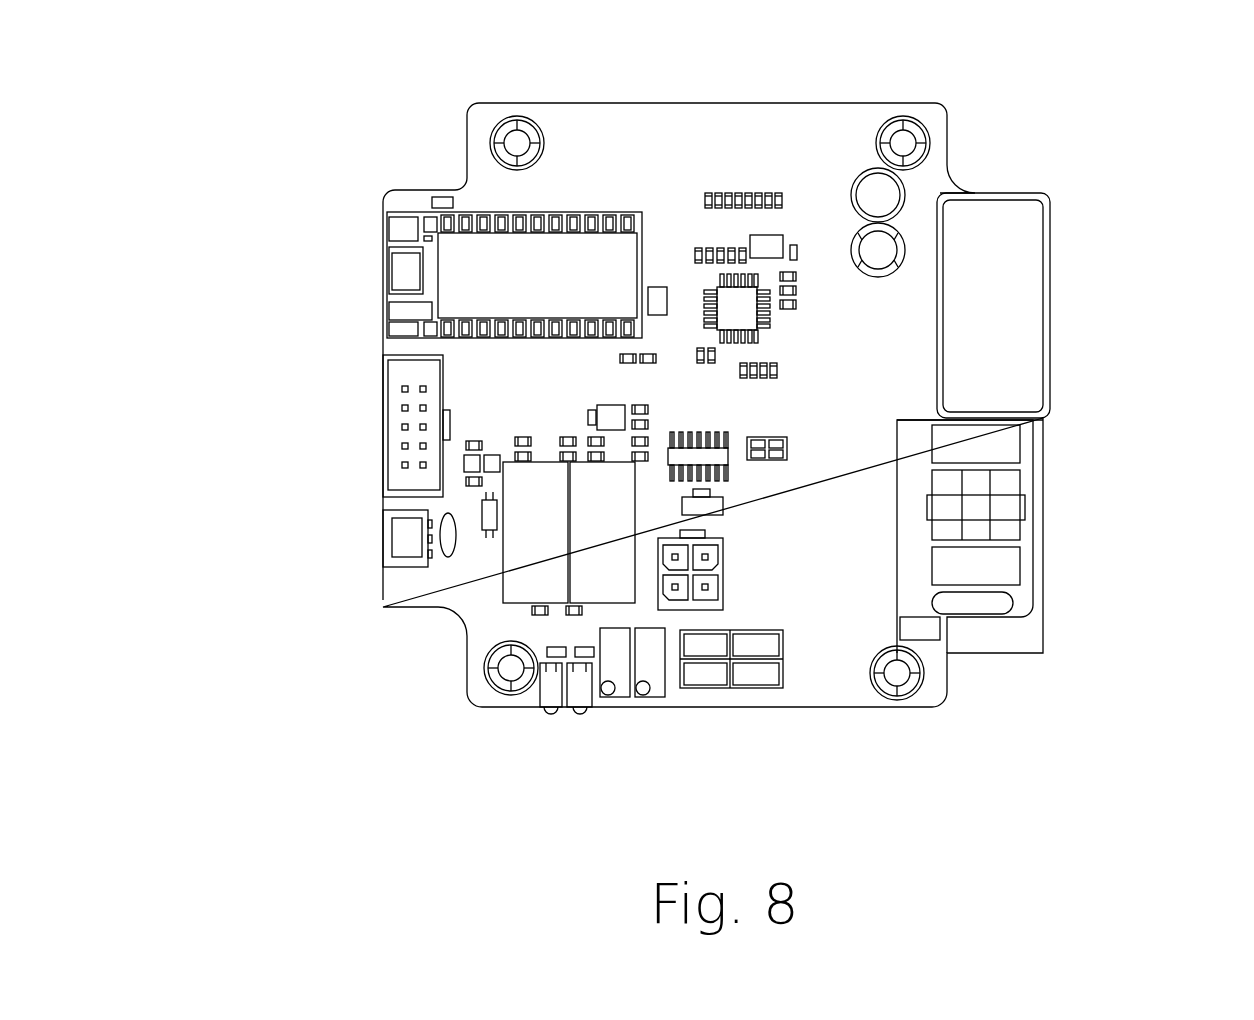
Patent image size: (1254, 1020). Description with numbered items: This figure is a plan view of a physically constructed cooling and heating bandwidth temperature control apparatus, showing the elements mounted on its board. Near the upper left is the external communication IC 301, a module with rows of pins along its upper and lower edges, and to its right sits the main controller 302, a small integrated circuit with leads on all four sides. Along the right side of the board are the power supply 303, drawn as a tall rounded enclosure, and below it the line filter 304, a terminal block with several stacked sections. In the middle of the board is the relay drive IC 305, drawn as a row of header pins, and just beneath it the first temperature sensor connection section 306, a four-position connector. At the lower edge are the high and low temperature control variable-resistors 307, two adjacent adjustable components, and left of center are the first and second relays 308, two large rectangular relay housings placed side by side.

The external communication IC 301 is at (547, 267).
The main controller 302 is at (724, 300).
The power supply 303 is at (990, 293).
The line filter 304 is at (1045, 535).
The relay drive IC 305 is at (707, 453).
The first temperature sensor connection section 306 is at (703, 608).
The high and low temperature control variable-resistors 307 is at (658, 695).
The first and second relays 308 is at (590, 585).